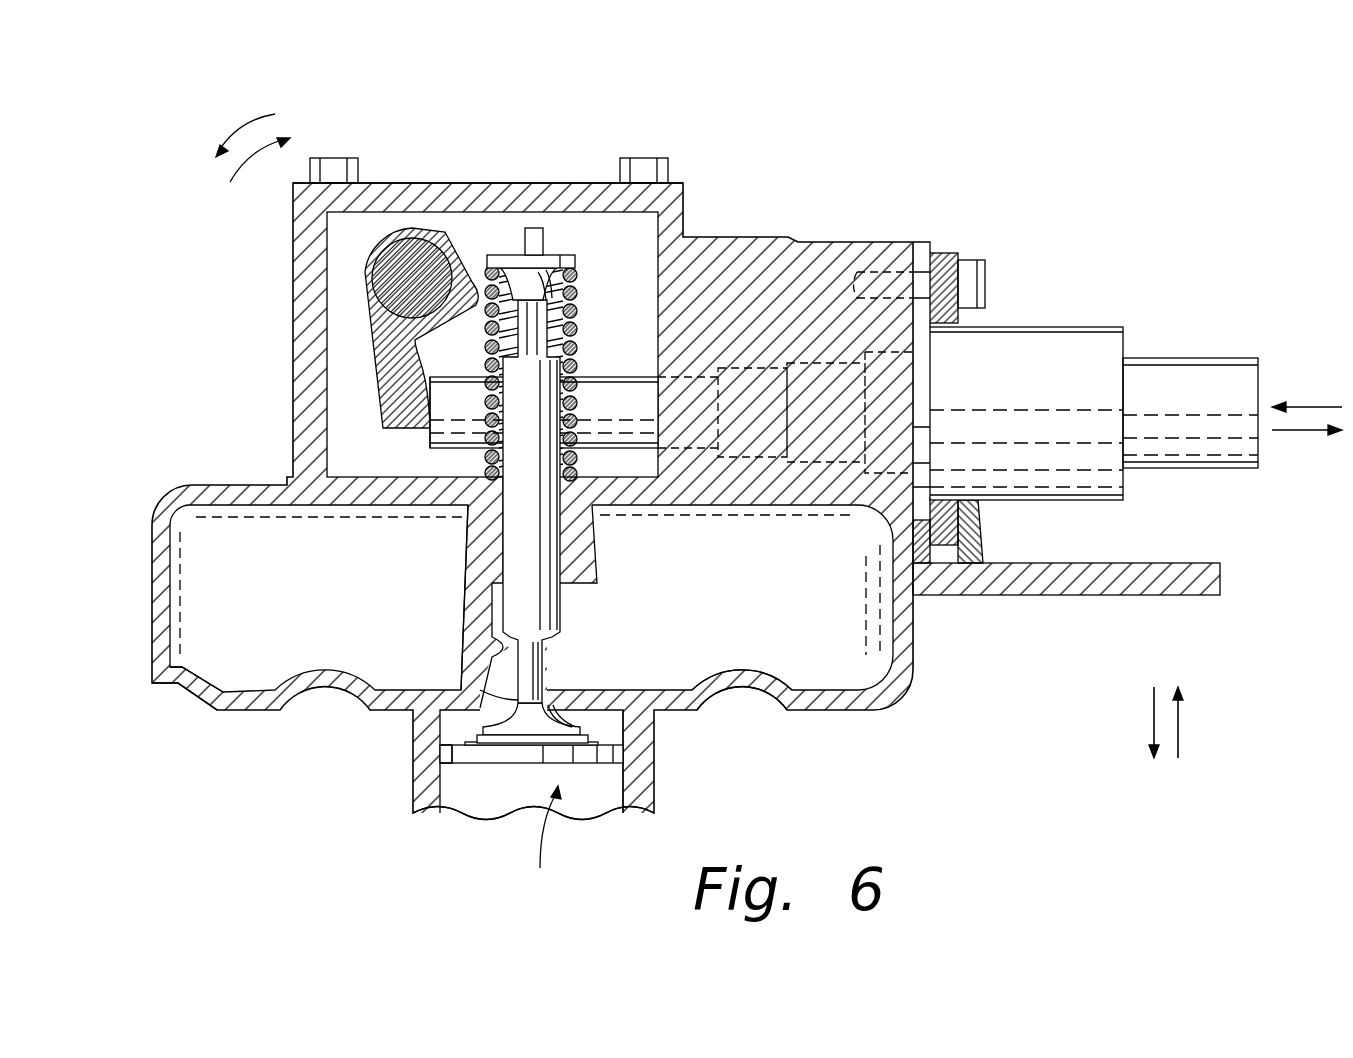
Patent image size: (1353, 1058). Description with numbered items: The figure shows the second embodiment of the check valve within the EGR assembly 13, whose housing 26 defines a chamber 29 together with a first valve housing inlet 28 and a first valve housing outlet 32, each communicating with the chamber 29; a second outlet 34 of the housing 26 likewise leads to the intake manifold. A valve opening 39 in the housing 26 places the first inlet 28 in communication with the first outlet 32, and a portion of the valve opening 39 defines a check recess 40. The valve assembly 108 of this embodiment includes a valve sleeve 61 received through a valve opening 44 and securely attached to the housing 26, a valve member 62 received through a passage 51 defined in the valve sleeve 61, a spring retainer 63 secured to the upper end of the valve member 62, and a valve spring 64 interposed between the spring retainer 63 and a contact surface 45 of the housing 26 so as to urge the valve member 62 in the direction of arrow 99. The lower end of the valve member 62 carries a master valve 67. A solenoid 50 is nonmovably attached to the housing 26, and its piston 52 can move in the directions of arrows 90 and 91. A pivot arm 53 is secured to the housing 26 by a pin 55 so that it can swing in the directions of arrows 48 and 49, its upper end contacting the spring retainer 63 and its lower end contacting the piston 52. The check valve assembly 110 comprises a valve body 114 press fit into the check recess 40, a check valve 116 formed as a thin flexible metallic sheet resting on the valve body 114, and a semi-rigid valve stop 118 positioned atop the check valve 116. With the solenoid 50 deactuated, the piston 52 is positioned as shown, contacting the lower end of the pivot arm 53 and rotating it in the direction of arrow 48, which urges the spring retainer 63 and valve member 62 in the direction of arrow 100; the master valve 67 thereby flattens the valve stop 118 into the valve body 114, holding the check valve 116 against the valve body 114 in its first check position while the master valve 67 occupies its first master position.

The EGR assembly 13 is at (872, 154).
The housing 26 is at (895, 682).
The first valve housing inlet 28 is at (623, 797).
The chamber 29 is at (600, 720).
The first valve housing outlet 32 is at (745, 668).
The second outlet 34 is at (185, 683).
The valve opening 39 is at (583, 693).
The check recess 40 is at (640, 718).
The valve opening 44 is at (503, 535).
The contact surface 45 is at (613, 503).
The arrow 48 is at (250, 152).
The arrow 49 is at (237, 125).
The solenoid 50 is at (1066, 352).
The passage 51 is at (500, 648).
The piston 52 is at (618, 398).
The pivot arm 53 is at (460, 300).
The pin 55 is at (412, 270).
The valve sleeve 61 is at (543, 598).
The valve member 62 is at (533, 653).
The spring retainer 63 is at (563, 257).
The valve spring 64 is at (577, 283).
The master valve 67 is at (500, 712).
The arrow 90 is at (1305, 405).
The arrow 91 is at (1302, 432).
The arrow 99 is at (1180, 738).
The arrow 100 is at (1152, 712).
The valve assembly 108 is at (421, 459).
The check valve assembly 110 is at (537, 841).
The valve body 114 is at (480, 757).
The check valve 116 is at (525, 750).
The valve stop 118 is at (473, 735).